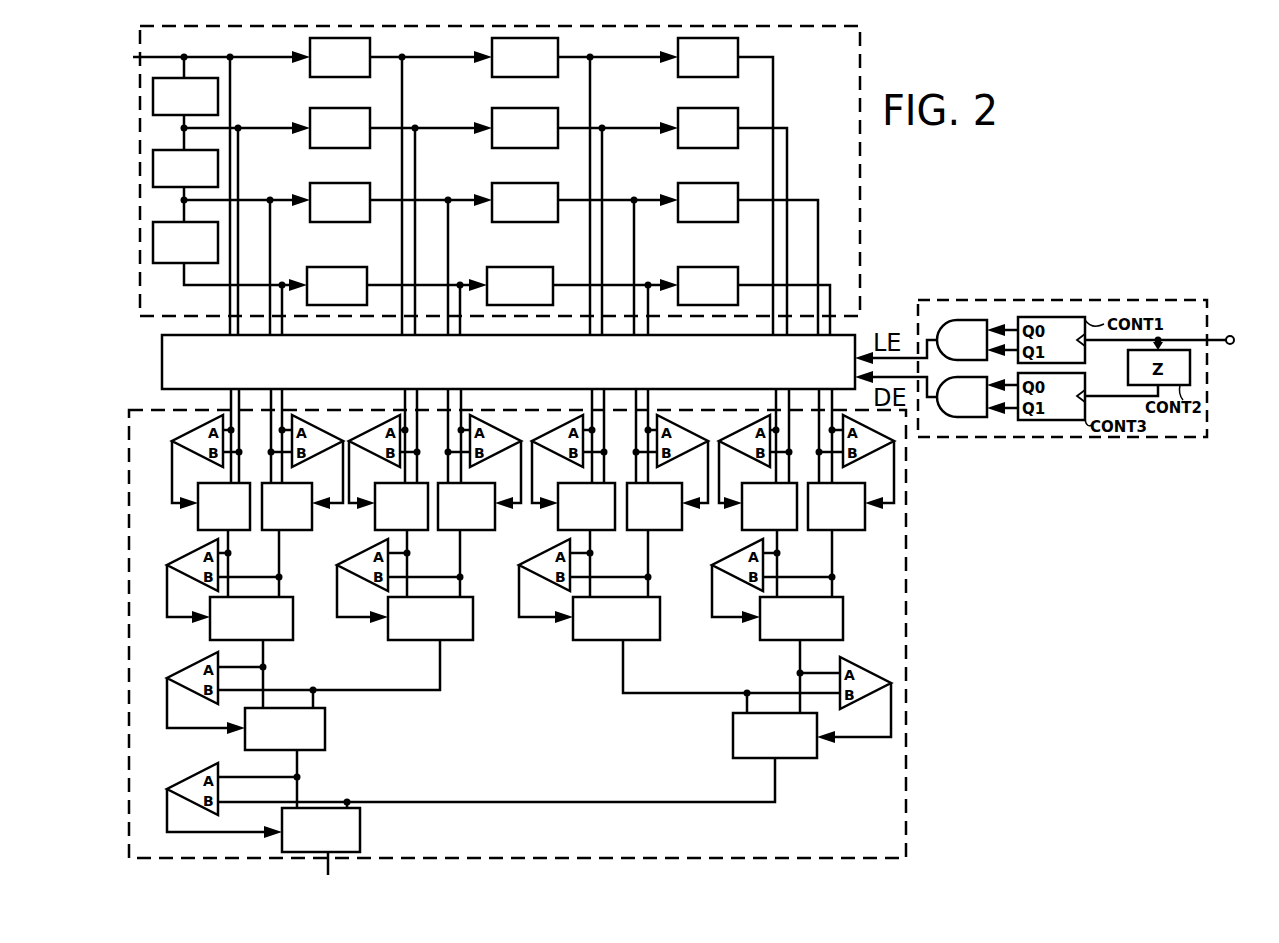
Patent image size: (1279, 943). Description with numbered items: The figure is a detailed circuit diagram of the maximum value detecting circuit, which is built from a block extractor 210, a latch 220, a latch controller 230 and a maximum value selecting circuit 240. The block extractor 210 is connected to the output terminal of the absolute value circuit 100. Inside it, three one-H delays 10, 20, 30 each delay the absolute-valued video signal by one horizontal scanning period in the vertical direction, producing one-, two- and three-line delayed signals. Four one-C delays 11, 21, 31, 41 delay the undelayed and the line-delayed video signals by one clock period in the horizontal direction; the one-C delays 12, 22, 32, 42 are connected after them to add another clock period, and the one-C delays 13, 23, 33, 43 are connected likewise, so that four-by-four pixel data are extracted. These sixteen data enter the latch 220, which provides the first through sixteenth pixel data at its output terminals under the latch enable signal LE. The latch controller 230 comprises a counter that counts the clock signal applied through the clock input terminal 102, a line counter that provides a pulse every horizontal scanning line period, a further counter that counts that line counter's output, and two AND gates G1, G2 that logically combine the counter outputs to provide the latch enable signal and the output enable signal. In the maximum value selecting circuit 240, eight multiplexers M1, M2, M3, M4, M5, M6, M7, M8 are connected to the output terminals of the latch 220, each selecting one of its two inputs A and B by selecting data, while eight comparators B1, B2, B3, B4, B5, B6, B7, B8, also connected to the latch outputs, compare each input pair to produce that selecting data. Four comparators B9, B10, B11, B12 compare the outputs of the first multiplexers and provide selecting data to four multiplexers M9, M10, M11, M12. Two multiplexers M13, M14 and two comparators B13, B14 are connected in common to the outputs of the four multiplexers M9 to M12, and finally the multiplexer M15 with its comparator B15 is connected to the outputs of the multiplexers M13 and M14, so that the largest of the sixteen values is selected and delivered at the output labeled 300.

The absolute value circuit 100 is at (120, 50).
The block extractor 210 is at (138, 222).
The 1H delay 10 is at (166, 115).
The 1H delay 20 is at (166, 187).
The 1H delay 30 is at (166, 263).
The 1C delay 11 is at (322, 77).
The 1C delay 12 is at (504, 77).
The 1C delay 13 is at (692, 77).
The 1C delay 21 is at (322, 148).
The 1C delay 22 is at (504, 148).
The 1C delay 23 is at (692, 148).
The 1C delay 31 is at (322, 222).
The 1C delay 32 is at (504, 222).
The 1C delay 33 is at (692, 222).
The 1C delay 41 is at (355, 267).
The 1C delay 42 is at (540, 267).
The 1C delay 43 is at (724, 267).
The latch 220 is at (162, 360).
The maximum value selecting circuit 240 is at (128, 618).
The latch controller 230 is at (1085, 437).
The clock input terminal 102 is at (1180, 341).
The output 300 is at (350, 872).
The AND gate G1 is at (968, 320).
The AND gate G2 is at (957, 417).
The comparator B1 is at (190, 453).
The comparator B2 is at (326, 453).
The comparator B3 is at (368, 453).
The comparator B4 is at (504, 453).
The comparator B5 is at (550, 453).
The comparator B6 is at (692, 453).
The comparator B7 is at (738, 453).
The comparator B8 is at (875, 453).
The comparator B9 is at (188, 577).
The comparator B10 is at (356, 577).
The comparator B11 is at (536, 577).
The comparator B12 is at (729, 577).
The comparator B13 is at (188, 690).
The comparator B14 is at (870, 700).
The comparator B15 is at (185, 801).
The multiplexer M1 is at (245, 530).
The multiplexer M2 is at (295, 530).
The multiplexer M3 is at (420, 530).
The multiplexer M4 is at (478, 530).
The multiplexer M5 is at (606, 530).
The multiplexer M6 is at (665, 530).
The multiplexer M7 is at (791, 530).
The multiplexer M8 is at (848, 530).
The multiplexer M9 is at (283, 640).
The multiplexer M10 is at (460, 640).
The multiplexer M11 is at (645, 640).
The multiplexer M12 is at (778, 640).
The multiplexer M13 is at (317, 750).
The multiplexer M14 is at (797, 758).
The multiplexer M15 is at (360, 832).